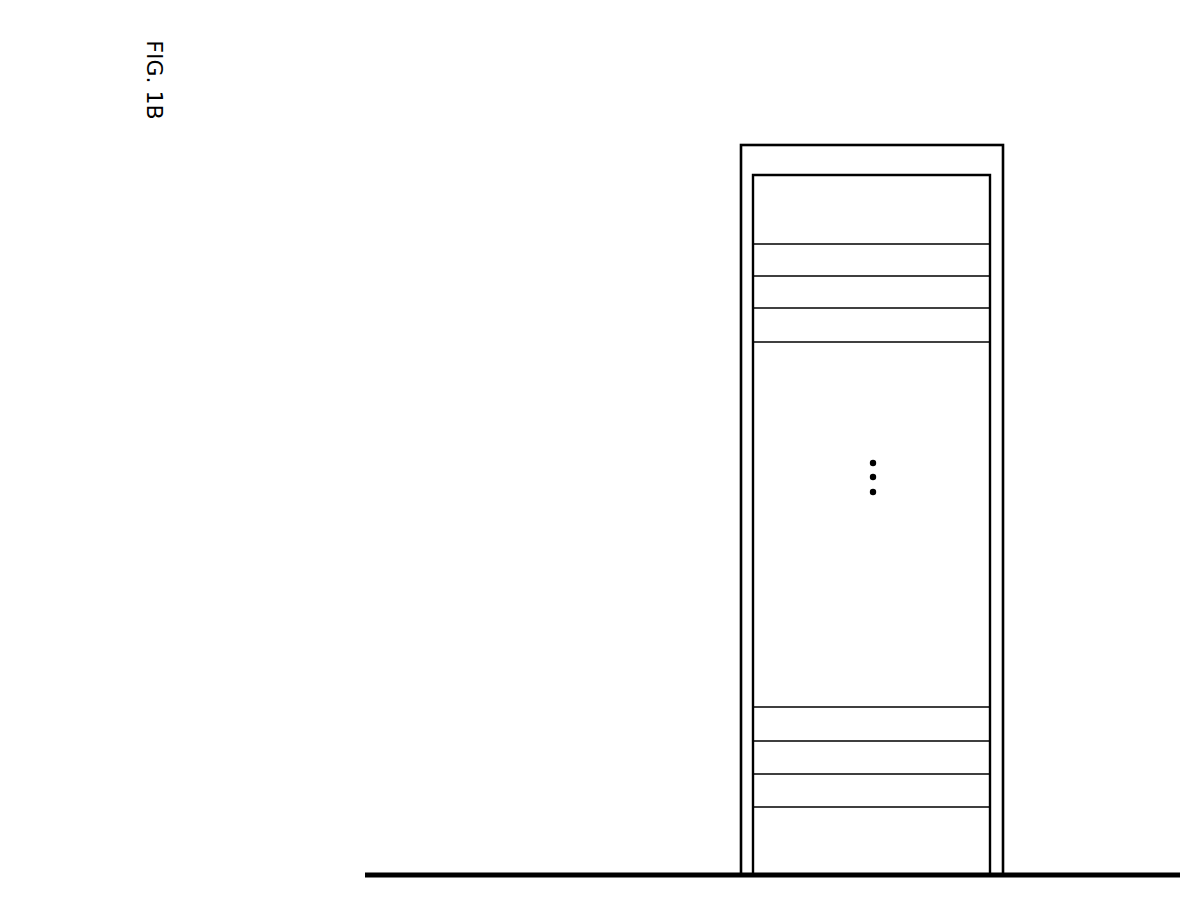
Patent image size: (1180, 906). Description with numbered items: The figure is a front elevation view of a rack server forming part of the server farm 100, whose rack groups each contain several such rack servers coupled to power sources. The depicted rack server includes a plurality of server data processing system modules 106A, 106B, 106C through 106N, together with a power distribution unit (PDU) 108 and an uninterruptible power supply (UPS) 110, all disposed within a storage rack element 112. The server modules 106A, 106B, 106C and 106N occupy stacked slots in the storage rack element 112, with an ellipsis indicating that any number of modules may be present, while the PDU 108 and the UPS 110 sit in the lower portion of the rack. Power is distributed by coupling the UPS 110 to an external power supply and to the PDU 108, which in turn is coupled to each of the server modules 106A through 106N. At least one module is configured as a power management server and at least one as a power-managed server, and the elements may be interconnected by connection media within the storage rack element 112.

The server farm 100 is at (455, 155).
The server data processing system module 106A is at (753, 257).
The server data processing system module 106B is at (753, 288).
The server data processing system module 106C is at (753, 322).
The server data processing system module 106N is at (753, 722).
The power distribution unit (PDU) 108 is at (992, 790).
The uninterruptible power supply (UPS) 110 is at (992, 837).
The storage rack element 112 is at (957, 145).